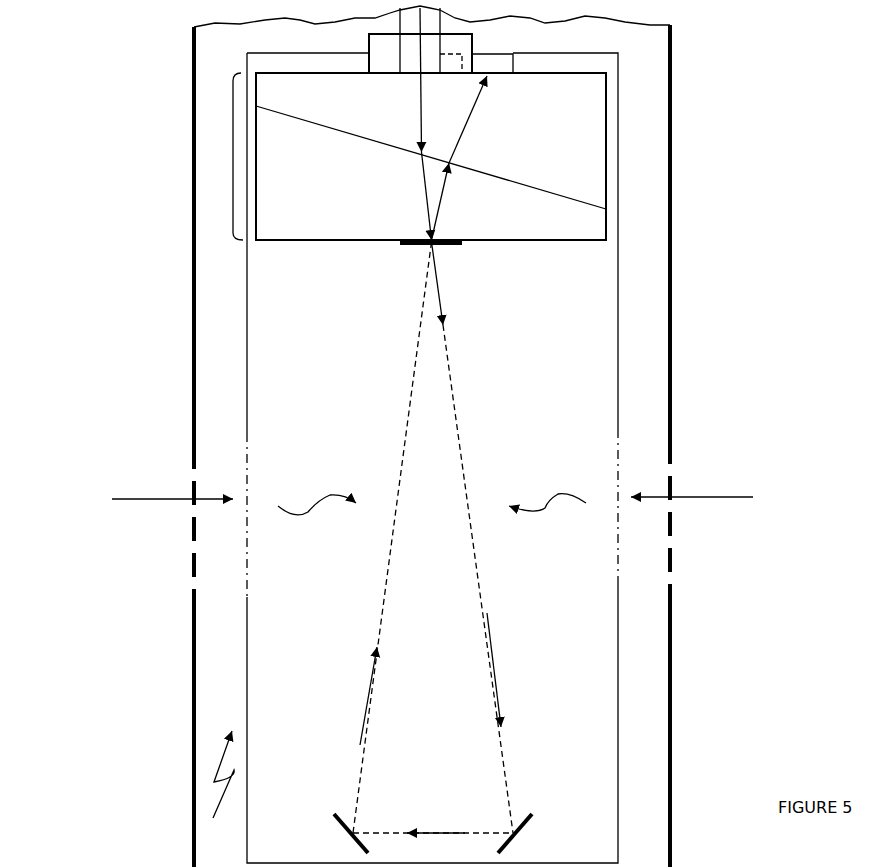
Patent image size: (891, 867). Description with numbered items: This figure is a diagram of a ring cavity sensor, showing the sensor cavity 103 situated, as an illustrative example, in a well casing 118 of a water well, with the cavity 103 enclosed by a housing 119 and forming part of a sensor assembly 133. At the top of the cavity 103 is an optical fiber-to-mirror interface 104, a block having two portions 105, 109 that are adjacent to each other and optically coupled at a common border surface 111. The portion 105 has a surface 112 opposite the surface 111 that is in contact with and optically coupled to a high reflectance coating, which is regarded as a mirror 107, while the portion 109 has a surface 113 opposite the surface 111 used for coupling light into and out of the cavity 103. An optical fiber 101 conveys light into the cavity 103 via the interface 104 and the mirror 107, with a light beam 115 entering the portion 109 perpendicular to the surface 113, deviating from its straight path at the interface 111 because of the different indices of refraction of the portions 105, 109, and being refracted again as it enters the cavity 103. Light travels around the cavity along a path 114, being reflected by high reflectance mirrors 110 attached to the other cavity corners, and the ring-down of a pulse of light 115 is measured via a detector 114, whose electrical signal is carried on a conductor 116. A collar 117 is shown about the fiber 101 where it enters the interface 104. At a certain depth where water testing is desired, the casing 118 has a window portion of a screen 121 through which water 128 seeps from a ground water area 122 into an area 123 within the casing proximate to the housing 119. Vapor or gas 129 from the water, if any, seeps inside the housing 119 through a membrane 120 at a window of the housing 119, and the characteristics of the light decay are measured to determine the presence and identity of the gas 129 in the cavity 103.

The optical fiber 101 is at (395, 22).
The ring cavity 103 is at (292, 410).
The optical fiber-to-mirror interface 104 is at (233, 158).
The first portion 105 is at (318, 194).
The mirror 107 is at (410, 246).
The second portion 109 is at (558, 143).
The high reflectance mirrors 110 is at (334, 814).
The common border surface 111 is at (370, 145).
The surface 112 is at (337, 243).
The surface 113 is at (556, 73).
The path / detector 114 is at (505, 53).
The light beam 115 is at (418, 85).
The conductor 116 is at (496, 53).
The collar 117 is at (370, 36).
The well casing 118 is at (193, 250).
The housing 119 is at (246, 265).
The membrane 120 is at (248, 523).
The screen 121 is at (193, 515).
The ground water area 122 is at (116, 446).
The area within the casing 123 is at (321, 634).
The water 128 is at (140, 500).
The vapor or gas 129 is at (318, 500).
The sensor assembly 133 is at (218, 787).